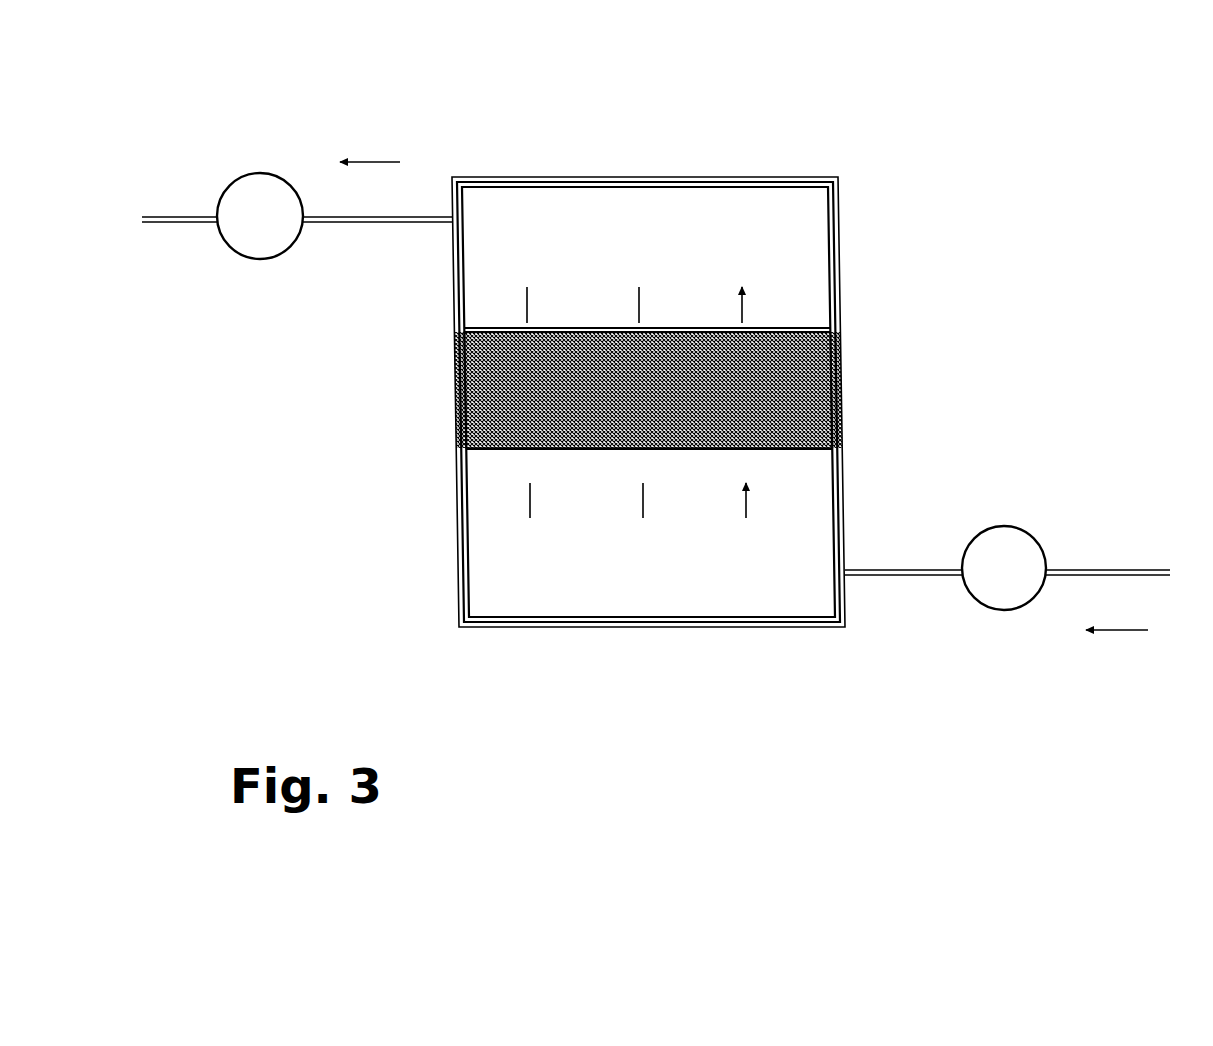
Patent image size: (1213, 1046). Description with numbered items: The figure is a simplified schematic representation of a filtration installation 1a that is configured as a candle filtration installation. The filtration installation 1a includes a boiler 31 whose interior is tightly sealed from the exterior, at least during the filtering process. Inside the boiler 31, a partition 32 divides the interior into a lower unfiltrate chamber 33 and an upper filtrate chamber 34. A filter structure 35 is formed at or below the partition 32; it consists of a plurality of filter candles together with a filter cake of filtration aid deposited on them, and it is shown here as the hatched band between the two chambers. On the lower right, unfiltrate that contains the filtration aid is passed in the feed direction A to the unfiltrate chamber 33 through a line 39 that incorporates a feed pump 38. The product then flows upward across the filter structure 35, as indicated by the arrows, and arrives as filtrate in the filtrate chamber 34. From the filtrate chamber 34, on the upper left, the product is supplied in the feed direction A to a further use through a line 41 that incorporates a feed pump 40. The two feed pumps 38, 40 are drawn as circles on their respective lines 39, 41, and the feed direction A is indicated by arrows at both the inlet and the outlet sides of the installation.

The filtration installation 1a is at (330, 572).
The boiler 31 is at (837, 238).
The partition 32 is at (787, 327).
The unfiltrate chamber 33 is at (670, 575).
The filtrate chamber 34 is at (662, 258).
The filter structure 35 is at (483, 395).
The feed pump 38 is at (1008, 548).
The line 39 is at (918, 573).
The feed pump 40 is at (275, 197).
The line 41 is at (183, 220).